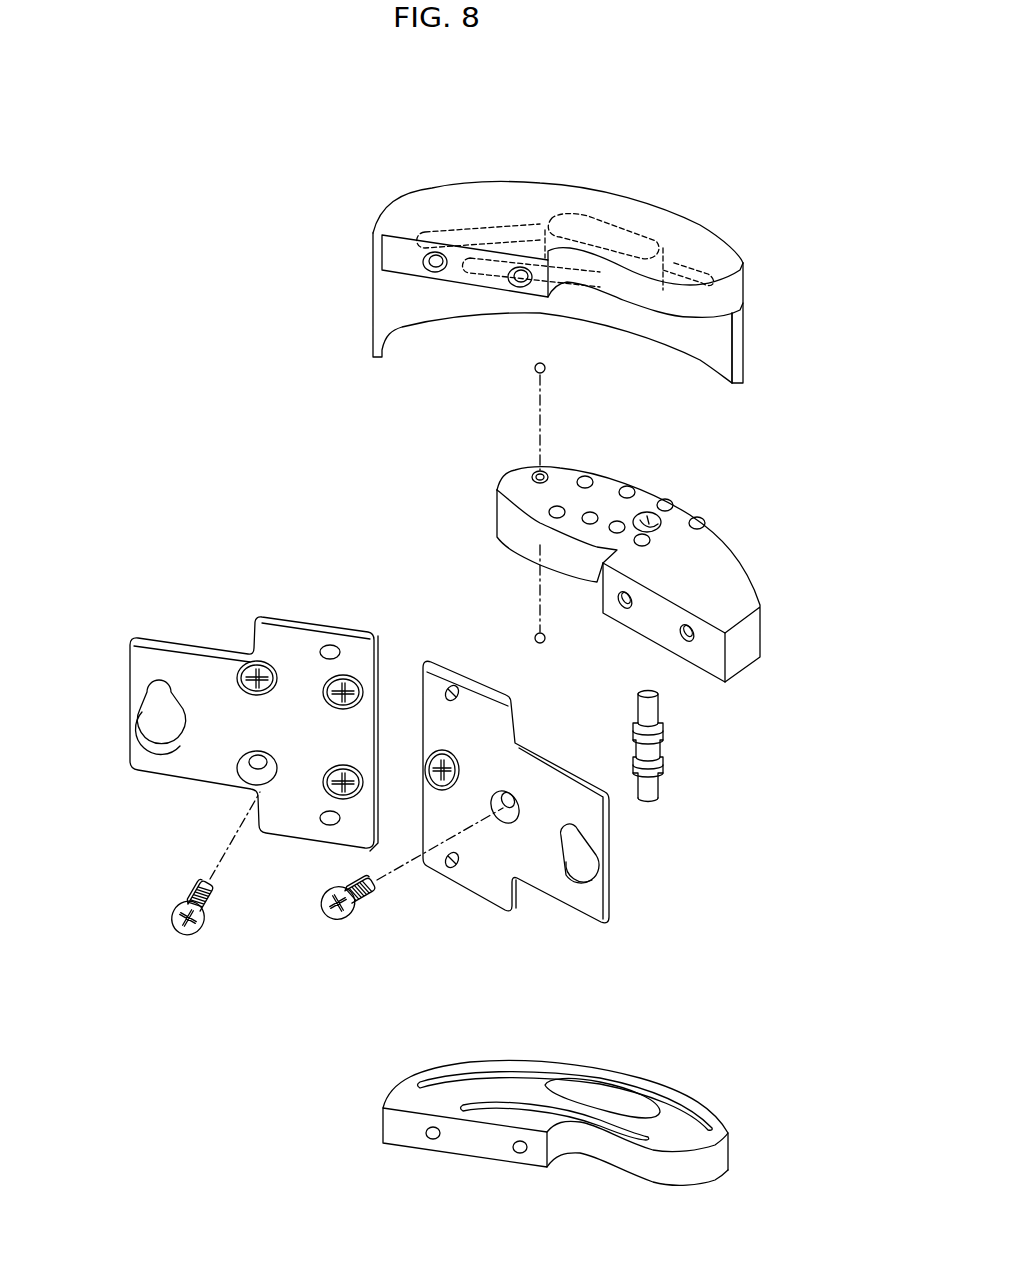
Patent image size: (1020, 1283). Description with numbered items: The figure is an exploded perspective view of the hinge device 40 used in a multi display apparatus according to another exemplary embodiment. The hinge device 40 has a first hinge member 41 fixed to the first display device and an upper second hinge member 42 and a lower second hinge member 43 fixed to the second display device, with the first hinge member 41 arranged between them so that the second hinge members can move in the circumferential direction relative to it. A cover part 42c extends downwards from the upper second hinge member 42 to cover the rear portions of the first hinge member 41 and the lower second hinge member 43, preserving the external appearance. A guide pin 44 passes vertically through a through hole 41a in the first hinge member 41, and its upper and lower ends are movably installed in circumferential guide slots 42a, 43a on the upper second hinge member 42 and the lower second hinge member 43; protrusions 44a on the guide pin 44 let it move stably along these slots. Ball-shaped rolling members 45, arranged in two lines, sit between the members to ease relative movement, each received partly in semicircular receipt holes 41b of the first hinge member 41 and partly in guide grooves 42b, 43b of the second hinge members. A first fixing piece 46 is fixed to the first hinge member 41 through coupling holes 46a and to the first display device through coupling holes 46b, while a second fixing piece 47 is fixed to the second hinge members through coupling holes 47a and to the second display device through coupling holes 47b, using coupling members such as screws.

The hinge device 40 is at (479, 85).
The first hinge member 41 is at (664, 551).
The through hole 41a is at (655, 518).
The receipt holes 41b is at (543, 474).
The upper second hinge member 42 is at (595, 253).
The guide slot 42a is at (643, 242).
The guide grooves 42b is at (496, 262).
The cover part 42c is at (737, 346).
The lower second hinge member 43 is at (574, 1095).
The guide slot 43a is at (585, 1090).
The guide grooves 43b is at (500, 1102).
The guide pin 44 is at (670, 752).
The protrusions 44a is at (633, 735).
The rolling members 45 is at (536, 372).
The first fixing piece 46 is at (552, 782).
The coupling holes 46a is at (503, 816).
The coupling holes 46b is at (450, 685).
The second fixing piece 47 is at (211, 728).
The coupling holes 47a is at (252, 773).
The coupling holes 47b is at (327, 647).